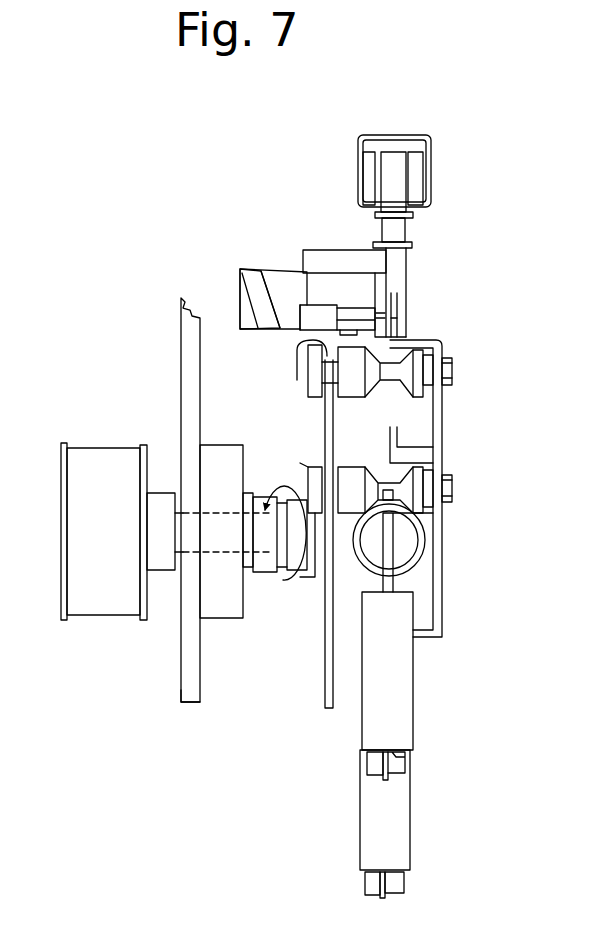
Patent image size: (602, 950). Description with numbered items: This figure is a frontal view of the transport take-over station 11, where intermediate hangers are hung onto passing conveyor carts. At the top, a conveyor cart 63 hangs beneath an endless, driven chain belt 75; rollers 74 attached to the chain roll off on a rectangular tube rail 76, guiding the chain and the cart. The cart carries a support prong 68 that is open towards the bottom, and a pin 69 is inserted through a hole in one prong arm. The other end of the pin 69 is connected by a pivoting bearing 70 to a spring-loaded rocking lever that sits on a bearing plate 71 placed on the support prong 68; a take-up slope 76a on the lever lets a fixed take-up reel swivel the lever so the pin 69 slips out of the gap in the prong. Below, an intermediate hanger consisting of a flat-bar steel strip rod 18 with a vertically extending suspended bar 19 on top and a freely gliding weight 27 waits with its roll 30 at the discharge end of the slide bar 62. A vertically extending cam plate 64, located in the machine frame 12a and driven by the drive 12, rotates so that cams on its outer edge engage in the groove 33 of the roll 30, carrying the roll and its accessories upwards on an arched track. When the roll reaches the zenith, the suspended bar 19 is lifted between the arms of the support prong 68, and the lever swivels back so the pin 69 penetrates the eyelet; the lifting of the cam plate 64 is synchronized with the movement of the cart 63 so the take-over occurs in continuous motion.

The transport take-over station 11 is at (494, 204).
The drive 12 is at (142, 416).
The machine frame 12a is at (192, 693).
The flat-bar steel strip rod 18 is at (445, 403).
The suspended bar 19 is at (402, 336).
The weight 27 is at (403, 704).
The roll 30 is at (352, 388).
The groove 33 is at (297, 370).
The slide bar 62 is at (414, 554).
The conveyor cart 63 is at (313, 202).
The cam plate 64 is at (288, 534).
The support prong 68 is at (280, 285).
The pin 69 is at (398, 322).
The pivoting bearing 70 is at (335, 318).
The bearing plate 71 is at (343, 262).
The rollers 74 is at (372, 170).
The chain belt 75 is at (408, 230).
The rectangular tube rail 76 is at (412, 135).
The take-up slope 76a is at (252, 282).